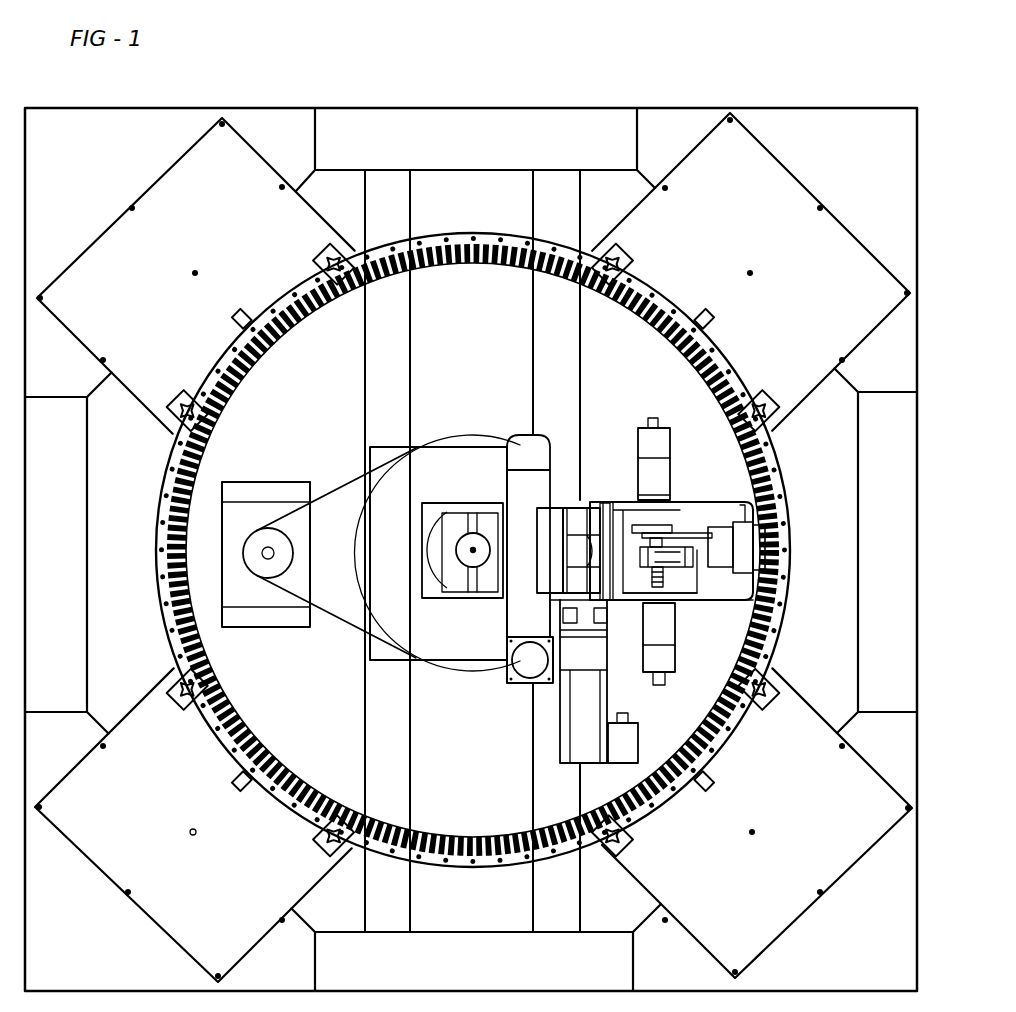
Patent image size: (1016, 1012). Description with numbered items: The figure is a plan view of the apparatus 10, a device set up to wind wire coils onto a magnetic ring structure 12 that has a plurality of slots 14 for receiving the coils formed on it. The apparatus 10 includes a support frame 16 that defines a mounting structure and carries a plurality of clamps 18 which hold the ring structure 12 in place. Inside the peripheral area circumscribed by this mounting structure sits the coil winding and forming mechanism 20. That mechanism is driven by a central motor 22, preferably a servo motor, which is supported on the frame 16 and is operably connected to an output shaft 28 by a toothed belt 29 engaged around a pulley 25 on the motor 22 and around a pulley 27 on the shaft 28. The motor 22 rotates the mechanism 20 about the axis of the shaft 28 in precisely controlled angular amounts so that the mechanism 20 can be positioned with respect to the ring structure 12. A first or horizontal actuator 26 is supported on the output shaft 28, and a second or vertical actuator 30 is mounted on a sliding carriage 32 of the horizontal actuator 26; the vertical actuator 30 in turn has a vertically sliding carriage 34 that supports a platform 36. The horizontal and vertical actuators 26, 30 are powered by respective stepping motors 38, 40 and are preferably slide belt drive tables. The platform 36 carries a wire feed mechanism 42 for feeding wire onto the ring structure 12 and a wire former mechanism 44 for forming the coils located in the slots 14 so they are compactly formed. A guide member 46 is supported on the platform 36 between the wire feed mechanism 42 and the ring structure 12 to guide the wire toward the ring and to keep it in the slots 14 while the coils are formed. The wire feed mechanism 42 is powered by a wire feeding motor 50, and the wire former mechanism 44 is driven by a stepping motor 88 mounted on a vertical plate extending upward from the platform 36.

The apparatus 10 is at (473, 100).
The magnetic ring structure 12 is at (473, 503).
The slots 14 is at (420, 270).
The support frame 16 is at (587, 152).
The clamps 18 is at (188, 395).
The coil winding and forming mechanism 20 is at (677, 493).
The motor 22 is at (265, 553).
The pulley 25 is at (268, 566).
The horizontal actuator 26 is at (552, 600).
The pulley 27 is at (468, 662).
The output shaft 28 is at (470, 546).
The toothed belt 29 is at (346, 628).
The vertical actuator 30 is at (578, 498).
The sliding carriage 32 is at (548, 576).
The vertically sliding carriage 34 is at (613, 604).
The platform 36 is at (704, 522).
The stepping motor 38 is at (530, 684).
The stepping motor 40 is at (628, 754).
The wire feed mechanism 42 is at (692, 604).
The wire former mechanism 44 is at (672, 500).
The guide member 46 is at (758, 522).
The wire feeding motor 50 is at (669, 658).
The stepping motor 88 is at (664, 452).